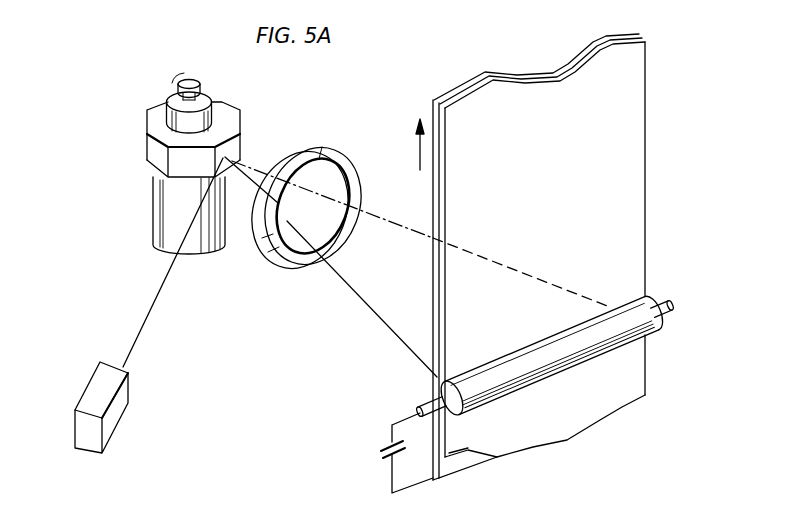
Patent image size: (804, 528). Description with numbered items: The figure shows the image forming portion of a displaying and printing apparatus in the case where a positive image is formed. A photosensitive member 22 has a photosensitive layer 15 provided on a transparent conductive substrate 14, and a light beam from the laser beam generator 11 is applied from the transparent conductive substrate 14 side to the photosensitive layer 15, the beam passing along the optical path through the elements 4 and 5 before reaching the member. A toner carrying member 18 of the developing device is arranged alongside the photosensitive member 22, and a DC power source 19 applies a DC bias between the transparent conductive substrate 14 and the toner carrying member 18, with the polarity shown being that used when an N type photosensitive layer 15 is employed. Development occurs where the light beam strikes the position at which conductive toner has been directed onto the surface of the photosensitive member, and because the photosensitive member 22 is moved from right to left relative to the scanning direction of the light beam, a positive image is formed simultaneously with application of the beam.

The laser light source 4 is at (152, 157).
The lens 5 is at (314, 152).
The laser beam generator 11 is at (87, 383).
The transparent conductive substrate 14 is at (448, 467).
The photosensitive layer 15 is at (465, 432).
The toner carrying member 18 is at (627, 338).
The DC power source 19 is at (386, 443).
The photosensitive member 22 is at (642, 125).